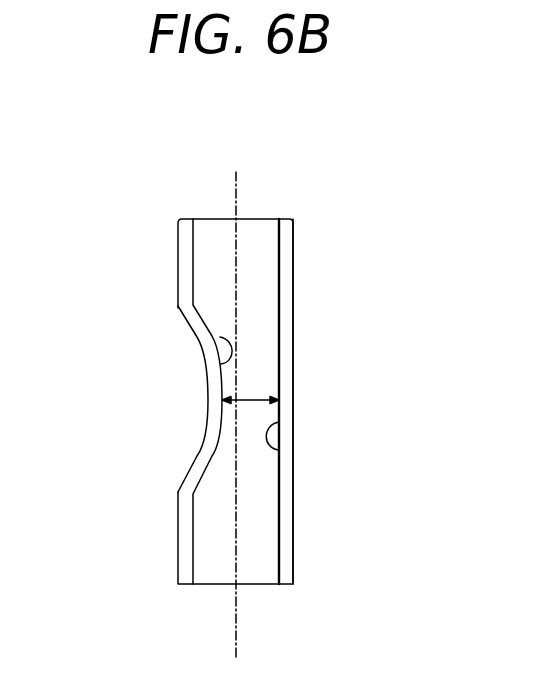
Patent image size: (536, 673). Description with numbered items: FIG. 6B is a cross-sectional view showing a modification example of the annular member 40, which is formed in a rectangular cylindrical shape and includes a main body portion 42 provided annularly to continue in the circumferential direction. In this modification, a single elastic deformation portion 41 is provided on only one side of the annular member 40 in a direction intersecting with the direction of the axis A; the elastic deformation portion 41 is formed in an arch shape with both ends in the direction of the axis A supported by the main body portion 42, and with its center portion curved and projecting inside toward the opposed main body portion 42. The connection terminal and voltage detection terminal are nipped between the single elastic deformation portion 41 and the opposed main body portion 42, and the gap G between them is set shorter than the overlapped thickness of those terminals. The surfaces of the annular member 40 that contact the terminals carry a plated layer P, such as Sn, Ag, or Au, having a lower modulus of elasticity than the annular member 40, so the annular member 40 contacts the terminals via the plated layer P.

The annular member 40 is at (237, 353).
The elastic deformation portion 41 is at (207, 387).
The main body portion 42 is at (286, 250).
The axis A is at (236, 401).
The gap G is at (252, 399).
The plated layer P is at (221, 338).